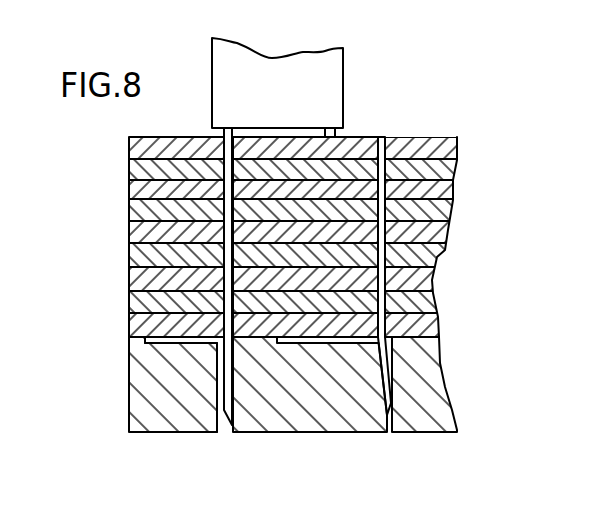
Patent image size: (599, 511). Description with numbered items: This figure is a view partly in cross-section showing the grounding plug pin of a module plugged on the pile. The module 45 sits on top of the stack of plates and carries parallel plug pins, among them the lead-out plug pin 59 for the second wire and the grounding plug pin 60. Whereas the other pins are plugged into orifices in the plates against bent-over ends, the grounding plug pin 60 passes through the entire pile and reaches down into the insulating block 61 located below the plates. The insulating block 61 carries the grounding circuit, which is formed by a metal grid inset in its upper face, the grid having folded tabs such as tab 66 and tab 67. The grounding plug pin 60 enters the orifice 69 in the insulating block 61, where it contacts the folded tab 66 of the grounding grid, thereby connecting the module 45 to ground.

The module 45 is at (308, 78).
The lead-out plug pin 59 is at (337, 133).
The grounding plug pin 60 is at (223, 210).
The insulating block 61 is at (165, 374).
The folded tab 66 is at (221, 388).
The folded tab 67 is at (383, 410).
The orifice 69 is at (226, 428).